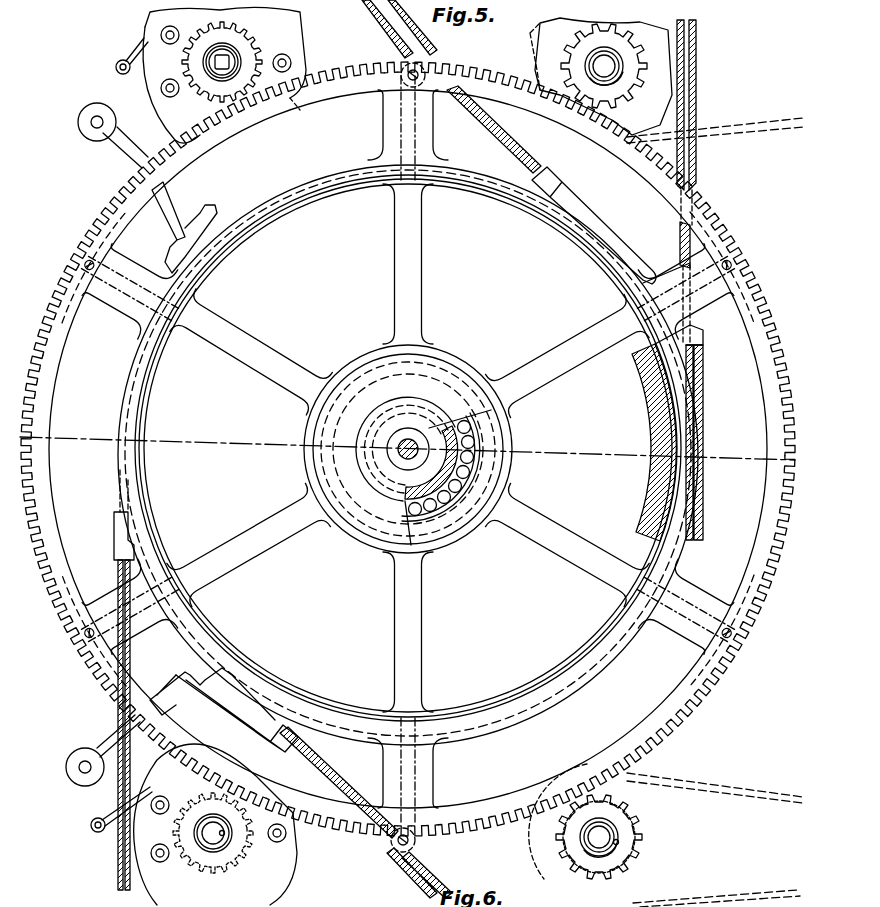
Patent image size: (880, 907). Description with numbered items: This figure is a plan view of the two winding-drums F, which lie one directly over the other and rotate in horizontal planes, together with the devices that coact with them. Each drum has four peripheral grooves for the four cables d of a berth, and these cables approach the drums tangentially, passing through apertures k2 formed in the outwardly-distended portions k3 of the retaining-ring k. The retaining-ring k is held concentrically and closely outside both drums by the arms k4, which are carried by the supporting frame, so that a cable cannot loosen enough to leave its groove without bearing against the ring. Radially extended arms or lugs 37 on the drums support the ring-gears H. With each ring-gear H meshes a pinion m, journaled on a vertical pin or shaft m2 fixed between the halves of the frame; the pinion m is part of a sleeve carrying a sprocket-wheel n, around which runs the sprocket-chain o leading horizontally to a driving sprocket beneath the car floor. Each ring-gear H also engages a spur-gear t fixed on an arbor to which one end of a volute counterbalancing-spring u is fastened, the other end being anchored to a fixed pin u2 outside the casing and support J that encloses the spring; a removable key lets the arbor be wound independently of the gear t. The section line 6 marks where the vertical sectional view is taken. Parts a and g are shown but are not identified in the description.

The winding-drums F is at (560, 668).
The ring-gears H is at (755, 535).
The radially-extended arms or lugs 37 is at (408, 449).
The section line 6 is at (405, 449).
The retaining-ring k is at (553, 187).
The upper connecting rod a is at (451, 86).
The cables d is at (366, 817).
The lower pivot g is at (402, 867).
The apertures k2 is at (693, 340).
The outwardly-distended portions k3 is at (698, 360).
The arms k4 is at (176, 190).
The volute counterbalancing-spring u is at (128, 52).
The fixed pin u2 is at (115, 67).
The casing and support J is at (220, 456).
The spur-gear t is at (262, 48).
The pinion m is at (627, 51).
The journal pins or shafts m2 is at (604, 68).
The sprocket-wheel n is at (686, 830).
The sprocket-chain o is at (735, 135).